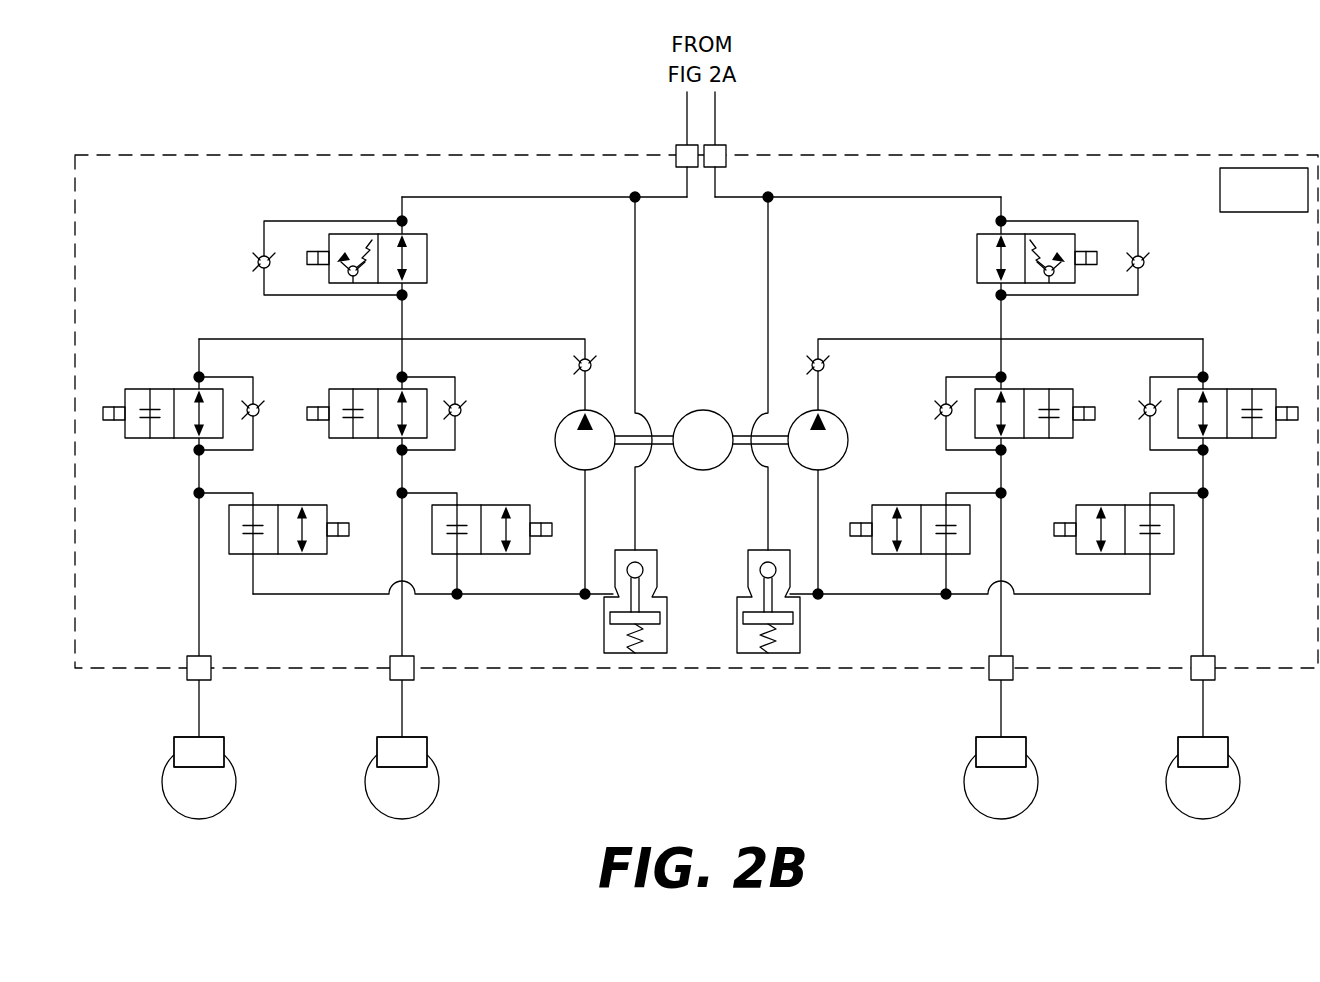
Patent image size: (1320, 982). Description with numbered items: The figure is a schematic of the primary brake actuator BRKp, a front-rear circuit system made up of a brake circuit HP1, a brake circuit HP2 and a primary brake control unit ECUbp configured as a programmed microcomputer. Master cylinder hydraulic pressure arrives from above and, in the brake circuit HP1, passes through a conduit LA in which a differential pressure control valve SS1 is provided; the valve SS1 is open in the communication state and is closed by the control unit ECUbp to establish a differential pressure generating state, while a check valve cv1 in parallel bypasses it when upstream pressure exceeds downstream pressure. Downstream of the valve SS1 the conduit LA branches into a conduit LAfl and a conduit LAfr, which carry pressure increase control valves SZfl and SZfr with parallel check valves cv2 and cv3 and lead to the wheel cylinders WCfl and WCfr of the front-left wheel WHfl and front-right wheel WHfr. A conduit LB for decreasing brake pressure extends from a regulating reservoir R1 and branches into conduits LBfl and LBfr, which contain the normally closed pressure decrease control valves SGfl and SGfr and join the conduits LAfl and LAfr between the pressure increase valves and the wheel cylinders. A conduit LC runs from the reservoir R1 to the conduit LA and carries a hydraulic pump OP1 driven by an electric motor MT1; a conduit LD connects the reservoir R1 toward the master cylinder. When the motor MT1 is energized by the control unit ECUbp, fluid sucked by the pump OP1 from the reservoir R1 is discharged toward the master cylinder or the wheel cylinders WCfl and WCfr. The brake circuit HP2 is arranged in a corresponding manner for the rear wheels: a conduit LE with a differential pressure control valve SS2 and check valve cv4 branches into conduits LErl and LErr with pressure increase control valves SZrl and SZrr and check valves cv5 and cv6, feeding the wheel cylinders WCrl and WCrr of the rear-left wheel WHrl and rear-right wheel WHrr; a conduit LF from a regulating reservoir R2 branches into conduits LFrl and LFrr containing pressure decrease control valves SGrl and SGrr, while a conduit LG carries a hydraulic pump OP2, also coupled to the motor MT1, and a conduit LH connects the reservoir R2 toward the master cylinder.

The primary brake actuator BRKp is at (1195, 154).
The primary brake control unit ECUbp is at (1264, 190).
The brake circuit HP1 is at (185, 218).
The brake circuit HP2 is at (1217, 278).
The conduit LA is at (569, 198).
The conduit LE is at (829, 198).
The conduit LC is at (482, 338).
The conduit LD is at (636, 326).
The conduit LH is at (767, 326).
The conduit LG is at (915, 338).
The conduit LB is at (470, 598).
The conduit LF is at (950, 598).
The conduit LAfl is at (199, 628).
The conduit LAfr is at (402, 628).
The conduit LErl is at (1001, 628).
The conduit LErr is at (1203, 628).
The conduit LBfl is at (253, 572).
The conduit LBfr is at (457, 572).
The conduit LFrl is at (946, 572).
The conduit LFrr is at (1150, 572).
The check valve cv1 is at (262, 256).
The check valve cv2 is at (258, 414).
The check valve cv3 is at (462, 415).
The check valve cv4 is at (1141, 256).
The check valve cv5 is at (940, 415).
The check valve cv6 is at (1143, 415).
The differential pressure control valve SS1 is at (428, 240).
The differential pressure control valve SS2 is at (976, 240).
The pressure increase control valve SZfl is at (193, 388).
The pressure increase control valve SZfr is at (400, 388).
The pressure increase control valve SZrl is at (1003, 389).
The pressure increase control valve SZrr is at (1205, 389).
The pressure decrease control valve SGfl is at (282, 505).
The pressure decrease control valve SGfr is at (487, 505).
The pressure decrease control valve SGrl is at (912, 505).
The pressure decrease control valve SGrr is at (1112, 505).
The hydraulic pump OP1 is at (585, 475).
The hydraulic pump OP2 is at (818, 475).
The electric motor MT1 is at (701, 440).
The regulating reservoir R1 is at (604, 624).
The regulating reservoir R2 is at (797, 624).
The wheel cylinder WCfl is at (199, 752).
The wheel cylinder WCfr is at (402, 752).
The wheel cylinder WCrl is at (1001, 752).
The wheel cylinder WCrr is at (1203, 752).
The front-left wheel WHfl is at (199, 778).
The front-right wheel WHfr is at (402, 778).
The rear-left wheel WHrl is at (1001, 778).
The rear-right wheel WHrr is at (1203, 778).